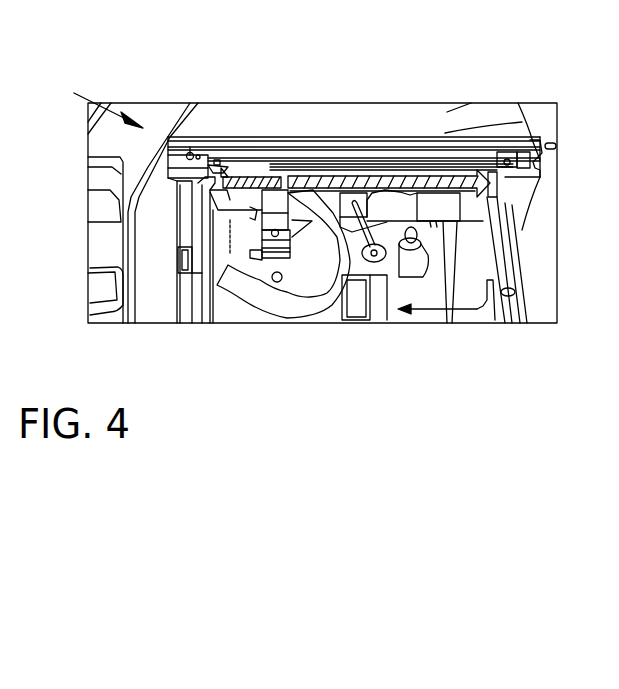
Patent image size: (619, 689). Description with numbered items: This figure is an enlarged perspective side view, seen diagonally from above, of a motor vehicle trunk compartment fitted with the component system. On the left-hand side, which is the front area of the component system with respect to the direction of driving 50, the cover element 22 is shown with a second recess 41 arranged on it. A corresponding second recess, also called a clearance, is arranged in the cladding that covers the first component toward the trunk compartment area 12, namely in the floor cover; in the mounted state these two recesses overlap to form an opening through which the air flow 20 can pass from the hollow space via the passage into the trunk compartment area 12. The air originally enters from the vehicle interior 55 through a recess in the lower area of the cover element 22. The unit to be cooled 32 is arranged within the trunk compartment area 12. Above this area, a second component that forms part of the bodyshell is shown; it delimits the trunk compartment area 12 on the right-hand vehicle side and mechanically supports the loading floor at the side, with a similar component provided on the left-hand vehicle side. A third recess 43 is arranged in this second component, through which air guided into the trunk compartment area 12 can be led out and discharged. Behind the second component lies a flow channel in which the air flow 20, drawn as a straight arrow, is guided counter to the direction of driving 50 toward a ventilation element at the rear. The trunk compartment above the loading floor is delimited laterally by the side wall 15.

The trunk compartment area 12 is at (505, 268).
The side wall 15 is at (374, 117).
The air flow 20 is at (419, 180).
The cover element 22 is at (143, 300).
The unit to be cooled 32 is at (274, 203).
The second recess 41 is at (185, 270).
The third recess 43 is at (245, 182).
The direction of driving 50 is at (434, 309).
The vehicle interior 55 is at (92, 101).